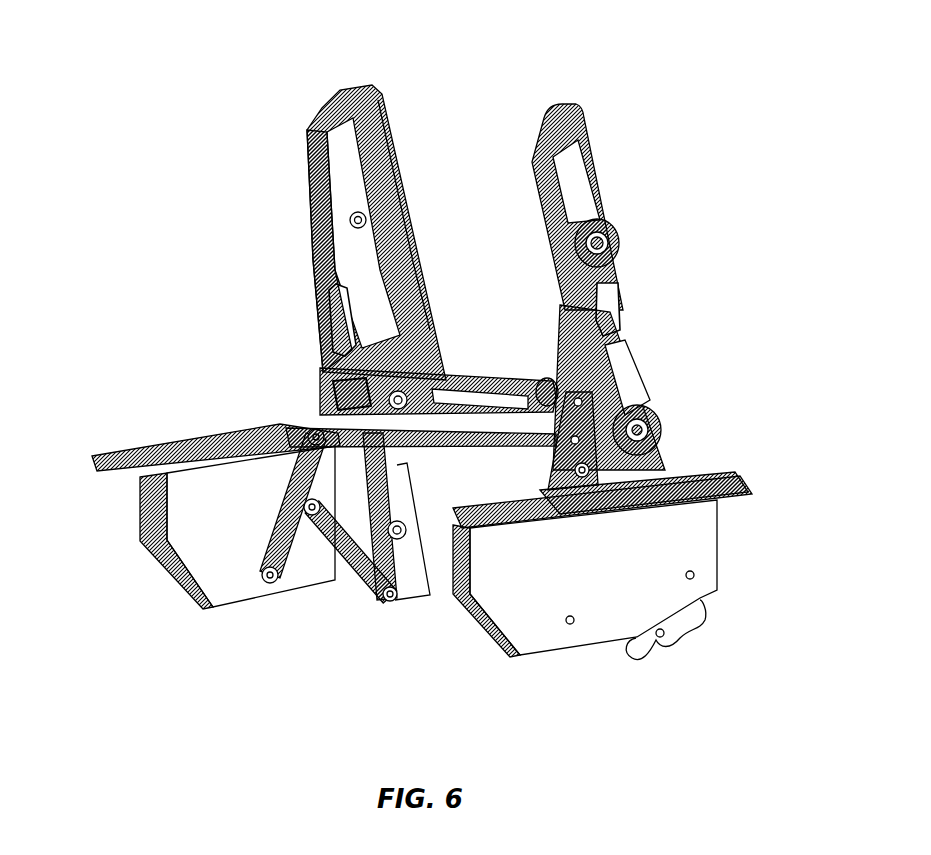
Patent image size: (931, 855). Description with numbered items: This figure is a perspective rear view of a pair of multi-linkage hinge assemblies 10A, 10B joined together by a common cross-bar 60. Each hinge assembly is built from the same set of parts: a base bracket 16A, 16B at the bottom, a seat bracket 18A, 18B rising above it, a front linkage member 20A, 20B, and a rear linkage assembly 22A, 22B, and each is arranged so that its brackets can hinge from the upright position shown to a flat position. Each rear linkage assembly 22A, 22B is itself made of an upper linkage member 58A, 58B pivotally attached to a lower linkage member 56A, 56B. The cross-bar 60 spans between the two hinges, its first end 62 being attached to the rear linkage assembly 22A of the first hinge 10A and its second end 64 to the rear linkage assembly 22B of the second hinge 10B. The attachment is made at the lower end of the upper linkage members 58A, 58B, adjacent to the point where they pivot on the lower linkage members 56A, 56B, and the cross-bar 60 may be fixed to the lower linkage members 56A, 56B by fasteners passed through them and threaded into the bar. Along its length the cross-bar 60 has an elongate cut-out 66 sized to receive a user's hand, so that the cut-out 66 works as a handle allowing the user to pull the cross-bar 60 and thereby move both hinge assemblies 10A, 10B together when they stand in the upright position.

The multi-linkage hinge assembly 10A is at (266, 230).
The multi-linkage hinge assembly 10B is at (520, 228).
The base bracket 16A is at (165, 578).
The base bracket 16B is at (490, 632).
The seat bracket 18A is at (318, 125).
The seat bracket 18B is at (537, 153).
The front linkage member 20A is at (375, 487).
The front linkage member 20B is at (667, 455).
The rear linkage assembly 22A is at (322, 350).
The rear linkage assembly 22B is at (595, 365).
The lower linkage member 56A is at (296, 478).
The lower linkage member 56B is at (588, 490).
The upper linkage member 58A is at (340, 300).
The upper linkage member 58B is at (590, 292).
The cross-bar 60 is at (478, 378).
The first end 62 is at (327, 391).
The second end 64 is at (548, 400).
The elongate cut-out 66 is at (450, 410).